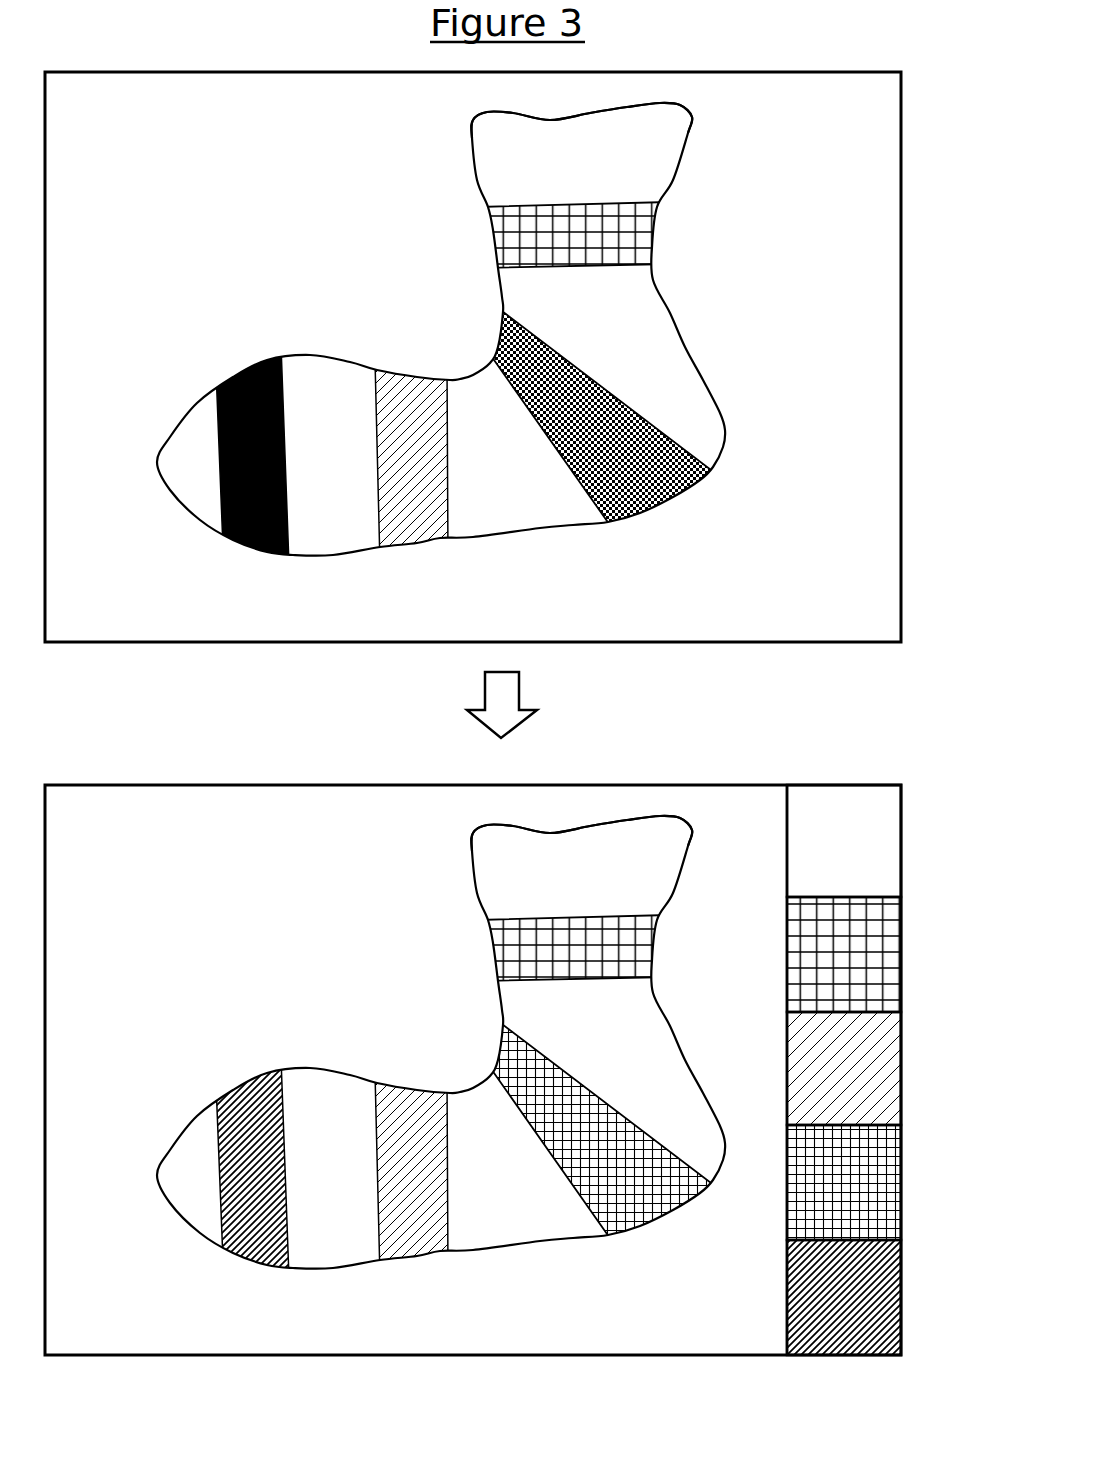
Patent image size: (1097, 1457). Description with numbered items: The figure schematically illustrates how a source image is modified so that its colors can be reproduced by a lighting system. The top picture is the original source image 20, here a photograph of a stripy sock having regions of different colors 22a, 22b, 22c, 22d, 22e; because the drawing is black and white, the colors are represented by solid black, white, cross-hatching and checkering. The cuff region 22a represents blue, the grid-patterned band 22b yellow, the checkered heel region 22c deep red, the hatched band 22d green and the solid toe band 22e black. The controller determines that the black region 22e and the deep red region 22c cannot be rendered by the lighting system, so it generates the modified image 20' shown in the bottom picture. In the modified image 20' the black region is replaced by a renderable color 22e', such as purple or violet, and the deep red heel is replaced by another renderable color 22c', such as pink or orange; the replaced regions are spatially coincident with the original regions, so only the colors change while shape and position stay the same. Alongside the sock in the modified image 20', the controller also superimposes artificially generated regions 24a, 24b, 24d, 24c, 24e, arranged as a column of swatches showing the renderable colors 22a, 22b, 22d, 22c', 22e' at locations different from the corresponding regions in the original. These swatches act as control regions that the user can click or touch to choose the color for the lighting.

The source image 20 is at (473, 324).
The modified version of the source image 20' is at (473, 1037).
The blue color region 22a is at (668, 152).
The yellow color region 22b is at (632, 242).
The deep red color region 22c is at (615, 435).
The replaced renderable color region 22c' is at (615, 1148).
The green color region 22d is at (415, 390).
The black color region 22e is at (252, 427).
The replaced renderable color region 22e' is at (252, 1141).
The artificially generated region 24a is at (893, 872).
The artificially generated region 24b is at (893, 992).
The artificially generated region 24c is at (893, 1218).
The artificially generated region 24d is at (893, 1107).
The artificially generated region 24e is at (893, 1327).